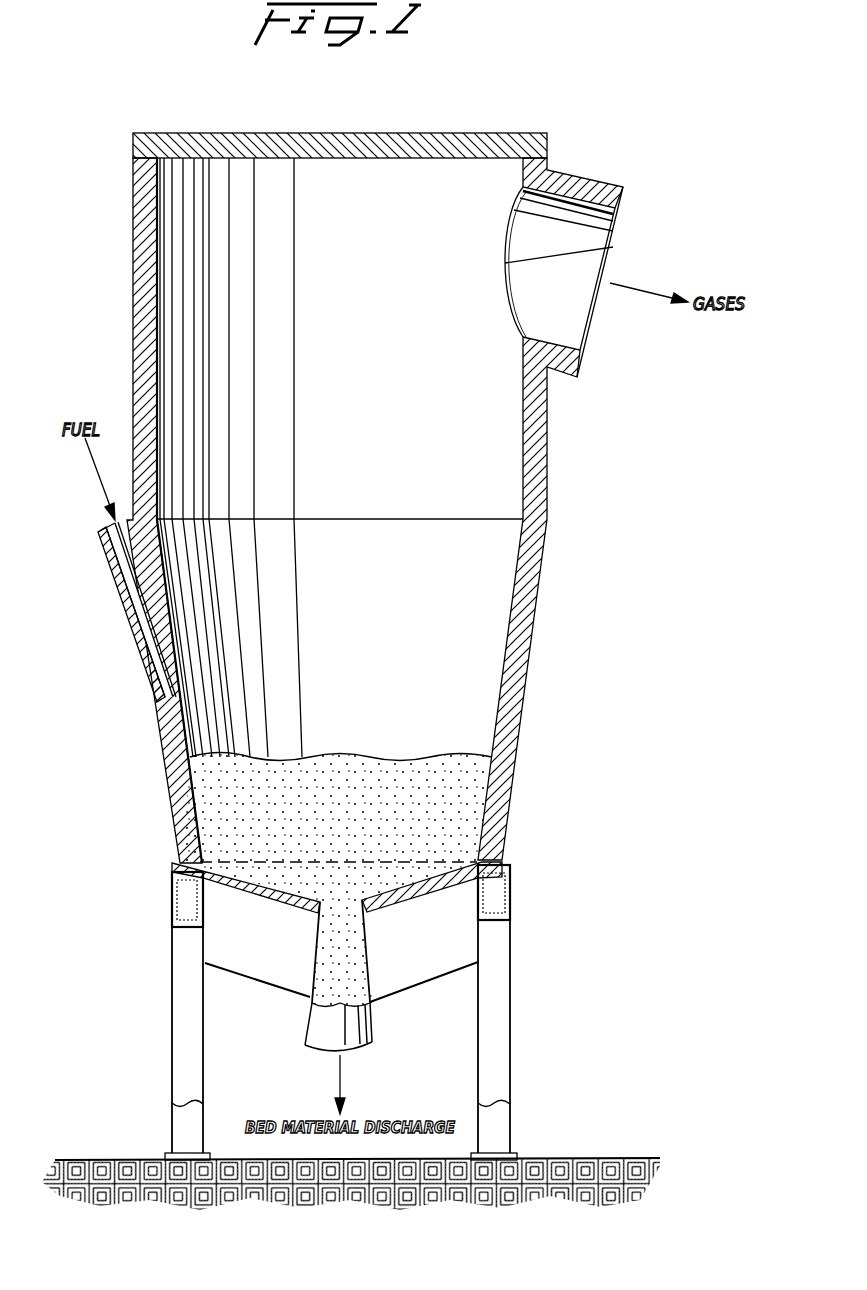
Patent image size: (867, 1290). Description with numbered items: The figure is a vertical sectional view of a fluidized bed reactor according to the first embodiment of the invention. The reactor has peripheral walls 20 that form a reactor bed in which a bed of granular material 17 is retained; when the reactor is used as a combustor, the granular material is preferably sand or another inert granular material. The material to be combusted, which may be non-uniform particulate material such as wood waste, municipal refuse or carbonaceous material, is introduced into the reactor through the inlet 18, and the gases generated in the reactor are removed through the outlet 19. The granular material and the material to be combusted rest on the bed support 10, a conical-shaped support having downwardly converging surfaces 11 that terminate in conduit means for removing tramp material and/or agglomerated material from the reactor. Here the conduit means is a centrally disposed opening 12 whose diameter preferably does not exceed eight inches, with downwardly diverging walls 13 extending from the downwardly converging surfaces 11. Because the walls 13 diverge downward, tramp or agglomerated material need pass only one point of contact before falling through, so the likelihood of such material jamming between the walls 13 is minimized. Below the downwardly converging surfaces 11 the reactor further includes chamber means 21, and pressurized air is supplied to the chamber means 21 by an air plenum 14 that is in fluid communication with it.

The bed support 10 is at (433, 873).
The downwardly converging surfaces 11 is at (433, 890).
The centrally disposed opening 12 is at (347, 913).
The downwardly diverging walls 13 is at (370, 977).
The air plenum 14 is at (172, 907).
The bed of granular material 17 is at (458, 782).
The inlet 18 is at (115, 524).
The outlet 19 is at (507, 268).
The peripheral walls 20 is at (168, 567).
The chamber means 21 is at (225, 938).